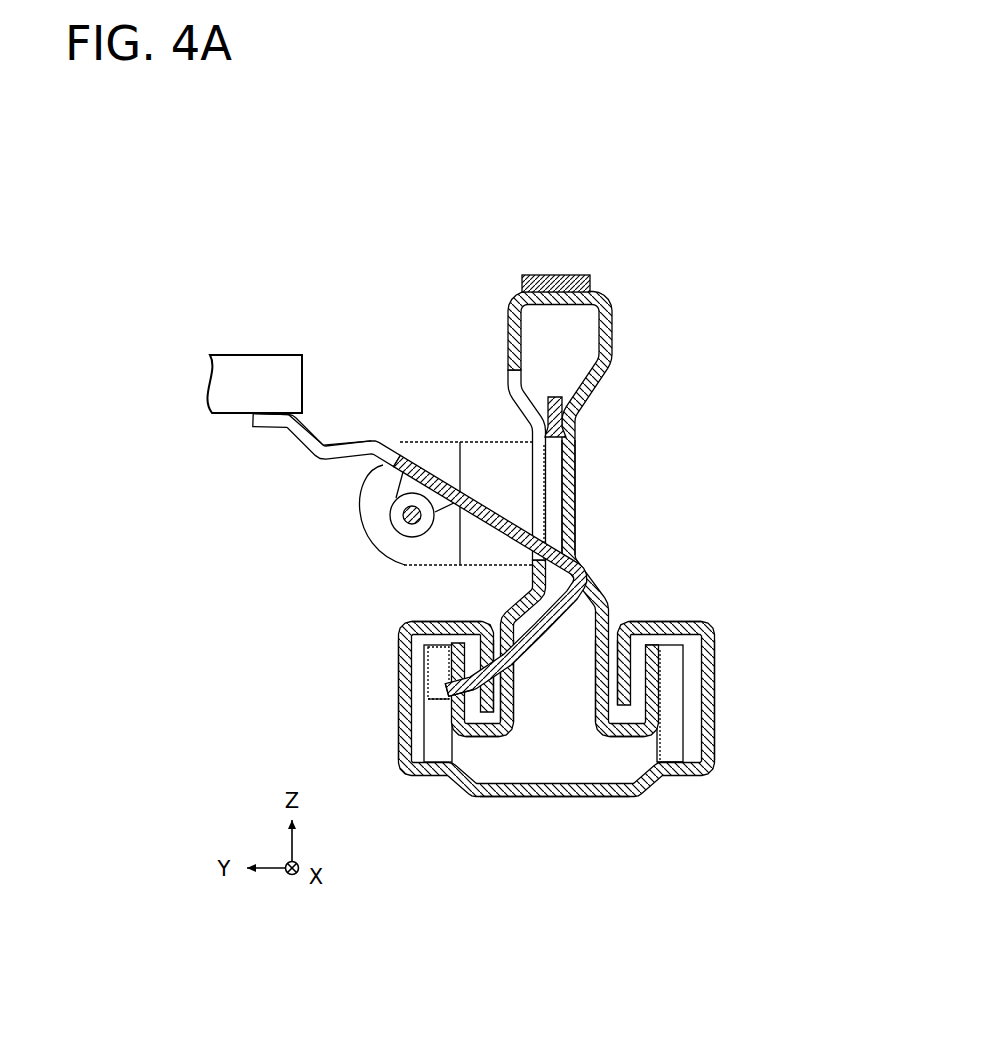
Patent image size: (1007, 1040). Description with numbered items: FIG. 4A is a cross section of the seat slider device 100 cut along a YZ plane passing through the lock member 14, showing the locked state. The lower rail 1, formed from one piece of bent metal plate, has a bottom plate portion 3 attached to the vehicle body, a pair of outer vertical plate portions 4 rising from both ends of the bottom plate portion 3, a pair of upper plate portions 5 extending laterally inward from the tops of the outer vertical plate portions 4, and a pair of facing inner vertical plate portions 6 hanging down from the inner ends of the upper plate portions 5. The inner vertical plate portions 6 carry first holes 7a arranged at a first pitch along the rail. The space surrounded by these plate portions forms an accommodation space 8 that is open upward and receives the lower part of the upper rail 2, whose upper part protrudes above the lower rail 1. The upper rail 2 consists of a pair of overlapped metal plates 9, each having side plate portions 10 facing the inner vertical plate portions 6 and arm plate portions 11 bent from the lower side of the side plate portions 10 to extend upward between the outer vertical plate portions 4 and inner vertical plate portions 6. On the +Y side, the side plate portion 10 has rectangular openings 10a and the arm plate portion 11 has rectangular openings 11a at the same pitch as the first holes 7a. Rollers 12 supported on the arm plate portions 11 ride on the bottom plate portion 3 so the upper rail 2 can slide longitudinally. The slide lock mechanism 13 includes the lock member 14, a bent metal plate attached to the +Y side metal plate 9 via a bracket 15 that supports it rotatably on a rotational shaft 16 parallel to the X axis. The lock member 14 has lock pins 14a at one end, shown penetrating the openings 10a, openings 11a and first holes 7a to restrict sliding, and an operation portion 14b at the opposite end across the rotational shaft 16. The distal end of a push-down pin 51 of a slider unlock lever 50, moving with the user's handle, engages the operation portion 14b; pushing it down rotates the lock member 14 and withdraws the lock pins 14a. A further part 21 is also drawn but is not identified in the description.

The seat slider device 100 is at (657, 290).
The lower rail 1 is at (570, 799).
The upper rail 2 is at (567, 276).
The bottom plate portion 3 is at (538, 798).
The outer vertical plate portions 4 is at (398, 745).
The upper plate portions 5 is at (435, 626).
The inner vertical plate portions 6 is at (478, 637).
The first holes 7a is at (625, 681).
The accommodation space 8 is at (521, 784).
The metal plates 9 is at (506, 322).
The side plate portions 10 is at (520, 690).
The rectangular openings 10a is at (516, 672).
The arm plate portions 11 is at (440, 655).
The rectangular openings 11a is at (446, 683).
The rollers 12 is at (448, 765).
The slide lock mechanism 13 is at (583, 554).
The lock member 14 is at (402, 466).
The lock pins 14a is at (755, 702).
The operation portion 14b is at (330, 445).
The bracket 15 is at (376, 515).
The rotational shaft 16 is at (420, 524).
The pin 21 is at (566, 406).
The slider unlock lever 50 is at (281, 344).
The push-down pin 51 is at (283, 355).